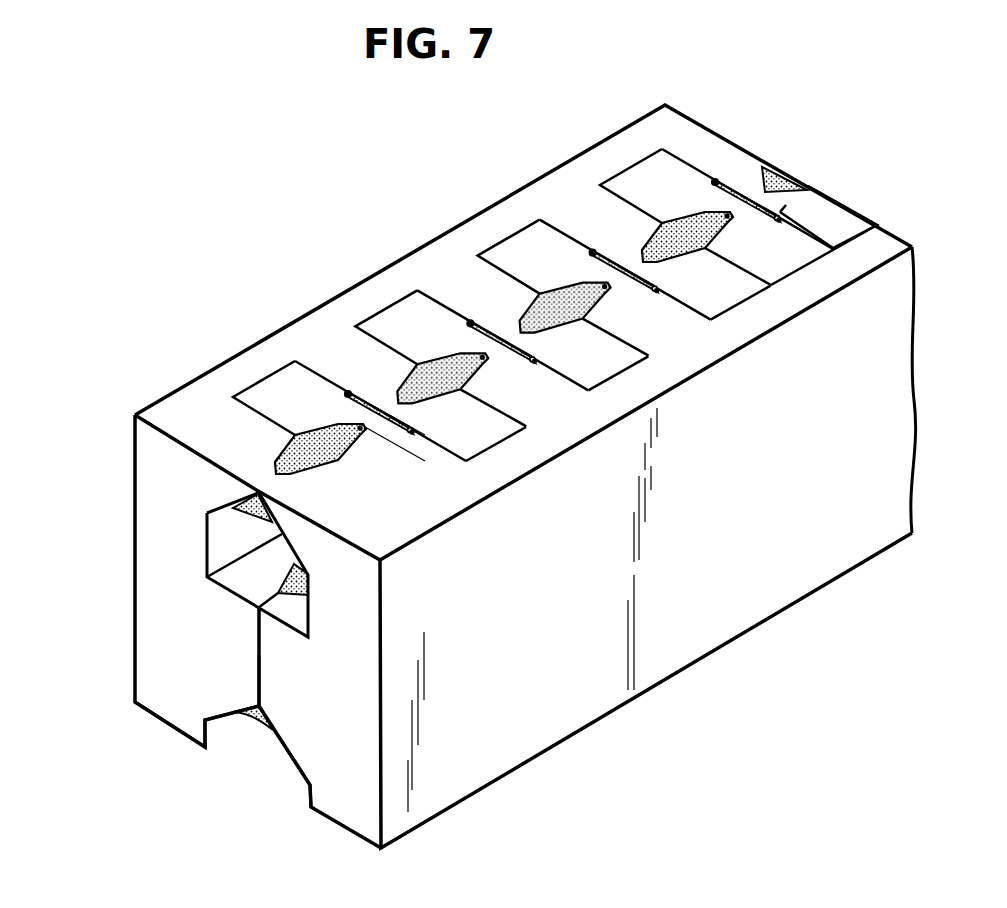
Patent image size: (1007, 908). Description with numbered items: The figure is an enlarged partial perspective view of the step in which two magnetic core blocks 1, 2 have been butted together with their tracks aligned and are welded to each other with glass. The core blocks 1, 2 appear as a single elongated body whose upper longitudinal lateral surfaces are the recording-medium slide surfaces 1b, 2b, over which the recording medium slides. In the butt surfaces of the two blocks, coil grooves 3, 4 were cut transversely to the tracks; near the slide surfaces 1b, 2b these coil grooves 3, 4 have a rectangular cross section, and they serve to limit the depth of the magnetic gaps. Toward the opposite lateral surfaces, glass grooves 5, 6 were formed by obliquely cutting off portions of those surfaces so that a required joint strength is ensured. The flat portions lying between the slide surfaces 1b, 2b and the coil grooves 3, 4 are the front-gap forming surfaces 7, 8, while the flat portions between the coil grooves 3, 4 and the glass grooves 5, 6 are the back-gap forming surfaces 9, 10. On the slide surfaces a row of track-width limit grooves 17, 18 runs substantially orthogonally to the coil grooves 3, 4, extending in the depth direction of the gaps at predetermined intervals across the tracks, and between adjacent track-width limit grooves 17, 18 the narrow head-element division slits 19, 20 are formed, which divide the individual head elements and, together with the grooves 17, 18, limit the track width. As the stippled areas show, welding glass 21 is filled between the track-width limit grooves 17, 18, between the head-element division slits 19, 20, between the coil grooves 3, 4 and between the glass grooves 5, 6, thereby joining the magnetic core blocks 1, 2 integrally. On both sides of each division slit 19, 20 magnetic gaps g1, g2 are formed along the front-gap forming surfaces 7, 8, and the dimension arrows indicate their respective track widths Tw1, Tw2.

The magnetic core block 1 is at (145, 618).
The recording-medium slide surface 1b is at (173, 410).
The magnetic core block 2 is at (358, 817).
The recording-medium slide surface 2b is at (398, 538).
The coil groove 3 is at (222, 546).
The coil groove 4 is at (305, 622).
The glass groove 5 is at (218, 732).
The glass groove 6 is at (308, 795).
The front-gap forming surface 7 is at (257, 492).
The front-gap forming surface 8 is at (178, 554).
The back-gap forming surface 9 is at (257, 655).
The back-gap forming surface 10 is at (178, 683).
The track-width limit groove 17 is at (287, 457).
The track-width limit groove 18 is at (347, 446).
The head-element division slit 19 is at (347, 398).
The head-element division slit 20 is at (523, 360).
The welding glass 21 is at (238, 512).
The magnetic gap g1 is at (358, 423).
The magnetic gap g2 is at (398, 413).
The track width Tw1 is at (430, 470).
The track width Tw2 is at (347, 366).